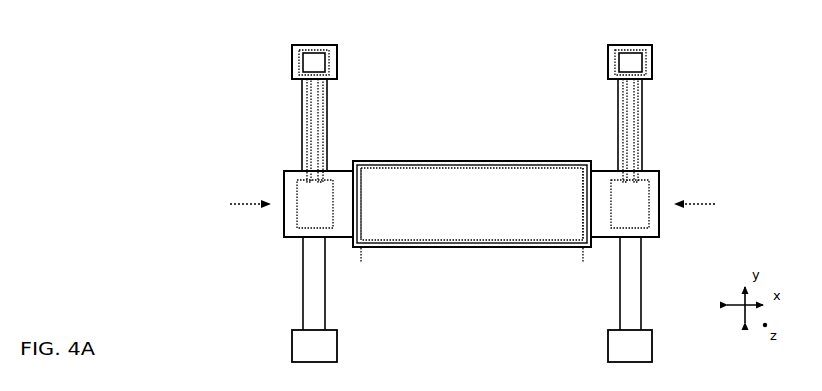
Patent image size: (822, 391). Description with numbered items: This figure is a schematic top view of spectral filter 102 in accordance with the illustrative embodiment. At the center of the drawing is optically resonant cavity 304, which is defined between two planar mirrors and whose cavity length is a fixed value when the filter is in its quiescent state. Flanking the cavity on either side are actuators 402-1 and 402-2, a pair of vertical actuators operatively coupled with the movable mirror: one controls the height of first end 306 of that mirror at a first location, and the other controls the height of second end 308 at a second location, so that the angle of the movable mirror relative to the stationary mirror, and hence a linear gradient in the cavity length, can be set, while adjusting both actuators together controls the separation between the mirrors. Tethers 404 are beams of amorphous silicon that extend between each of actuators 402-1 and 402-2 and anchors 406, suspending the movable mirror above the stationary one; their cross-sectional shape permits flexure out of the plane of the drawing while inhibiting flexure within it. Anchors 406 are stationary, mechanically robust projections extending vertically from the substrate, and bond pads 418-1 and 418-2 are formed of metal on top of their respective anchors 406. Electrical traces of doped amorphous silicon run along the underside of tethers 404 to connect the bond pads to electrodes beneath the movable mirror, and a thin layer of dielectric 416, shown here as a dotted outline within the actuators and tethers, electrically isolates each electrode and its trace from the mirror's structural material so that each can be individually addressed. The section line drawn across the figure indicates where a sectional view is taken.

The spectral filter 102 is at (76, 51).
The bond pad 418-1 is at (313, 62).
The bond pad 418-2 is at (630, 62).
The actuator 402-1 is at (287, 166).
The actuator 402-2 is at (656, 166).
The dielectric 416 is at (326, 178).
The optically resonant cavity 304 is at (493, 147).
The first end 306 is at (365, 221).
The second end 308 is at (580, 221).
The tether 404 is at (313, 290).
The anchor 406 is at (290, 340).